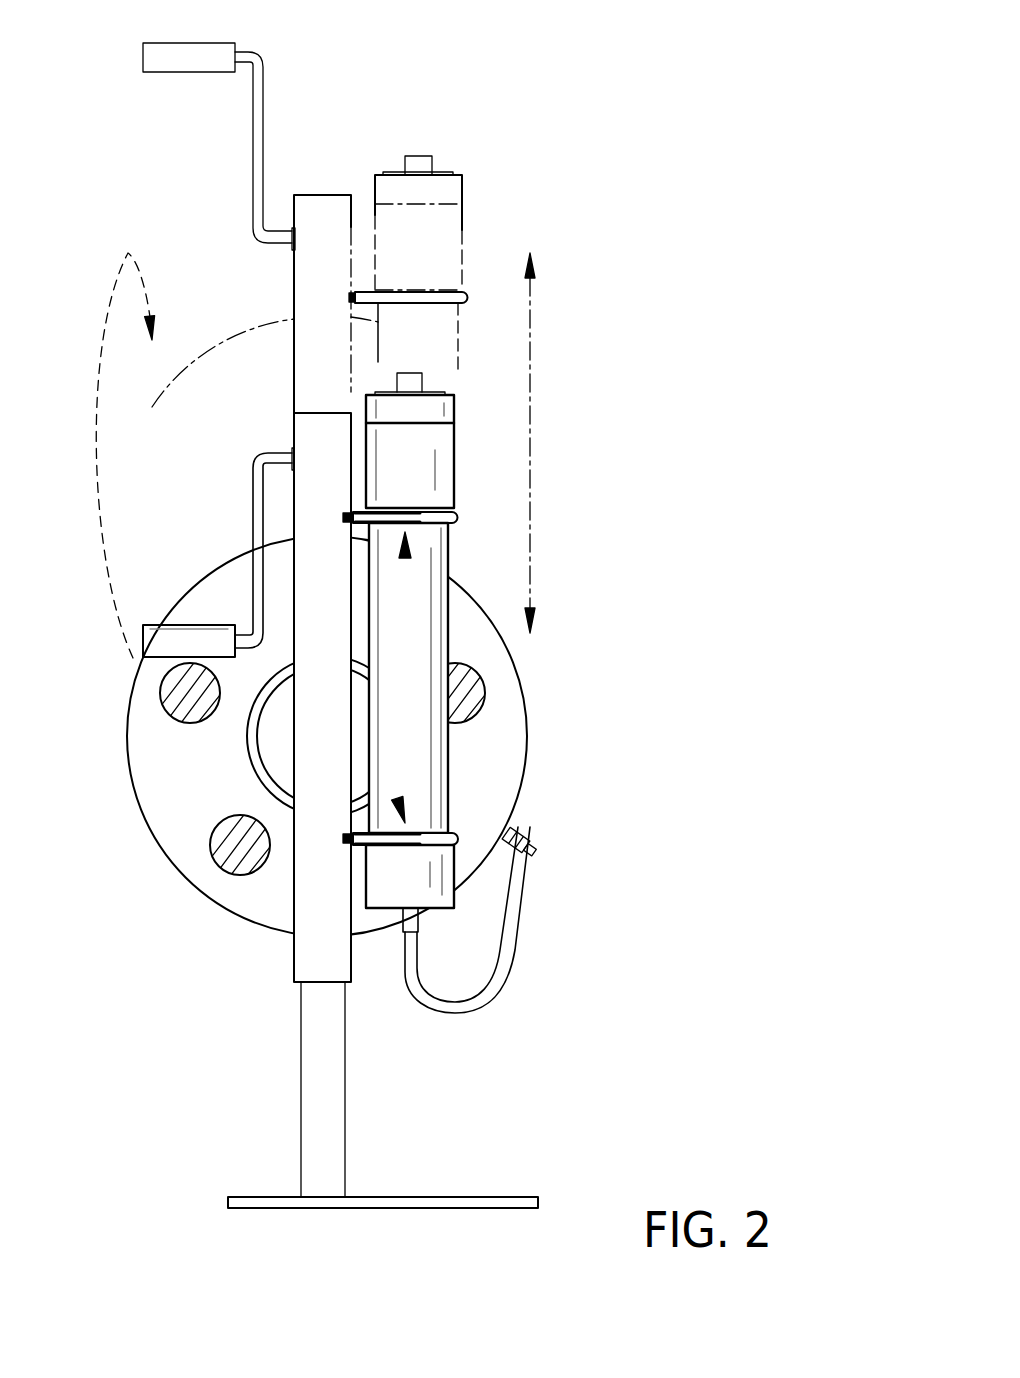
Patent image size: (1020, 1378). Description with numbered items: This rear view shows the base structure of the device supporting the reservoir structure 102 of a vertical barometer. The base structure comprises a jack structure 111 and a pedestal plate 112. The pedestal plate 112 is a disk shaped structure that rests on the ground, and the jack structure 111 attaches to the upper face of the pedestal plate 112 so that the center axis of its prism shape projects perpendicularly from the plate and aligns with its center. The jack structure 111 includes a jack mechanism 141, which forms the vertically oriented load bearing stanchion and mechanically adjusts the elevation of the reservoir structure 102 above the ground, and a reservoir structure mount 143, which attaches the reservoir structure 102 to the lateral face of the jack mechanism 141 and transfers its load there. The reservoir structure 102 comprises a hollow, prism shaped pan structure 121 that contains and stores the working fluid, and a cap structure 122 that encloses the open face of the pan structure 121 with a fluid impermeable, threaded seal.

The reservoir structure 102 is at (537, 652).
The jack structure 111 is at (493, 1197).
The pedestal plate 112 is at (320, 1085).
The pan structure 121 is at (485, 727).
The cap structure 122 is at (448, 410).
The jack mechanism 141 is at (278, 569).
The reservoir structure mount 143 is at (405, 550).